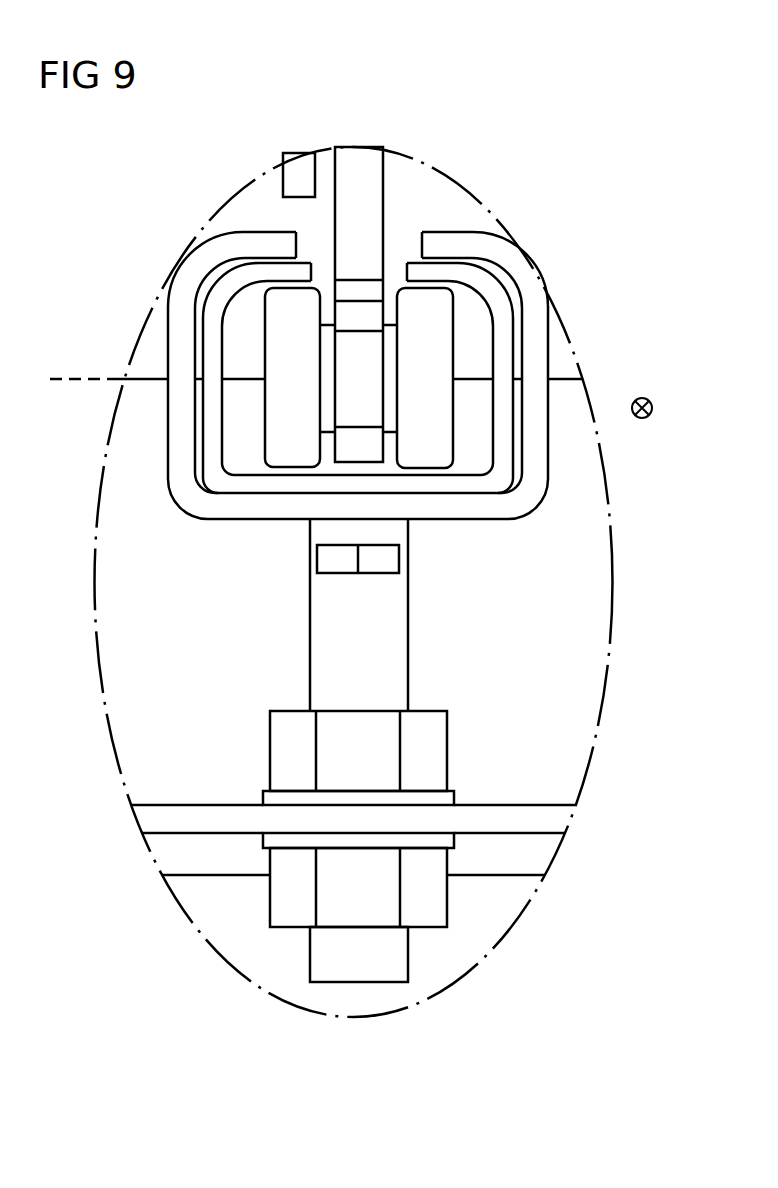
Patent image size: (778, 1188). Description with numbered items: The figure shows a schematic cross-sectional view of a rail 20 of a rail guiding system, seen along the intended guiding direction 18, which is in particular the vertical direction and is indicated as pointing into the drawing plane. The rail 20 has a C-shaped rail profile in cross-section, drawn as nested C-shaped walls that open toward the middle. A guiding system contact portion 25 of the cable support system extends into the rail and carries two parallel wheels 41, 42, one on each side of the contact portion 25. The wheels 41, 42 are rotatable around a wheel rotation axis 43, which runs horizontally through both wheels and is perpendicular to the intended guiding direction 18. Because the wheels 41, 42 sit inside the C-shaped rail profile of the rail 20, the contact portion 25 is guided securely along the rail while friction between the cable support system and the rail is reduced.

The intended guiding direction 18 is at (647, 418).
The rail 20 is at (513, 273).
The guiding system contact portion 25 is at (395, 212).
The wheel 41 is at (280, 426).
The wheel 42 is at (442, 332).
The wheel rotation axis 43 is at (70, 378).